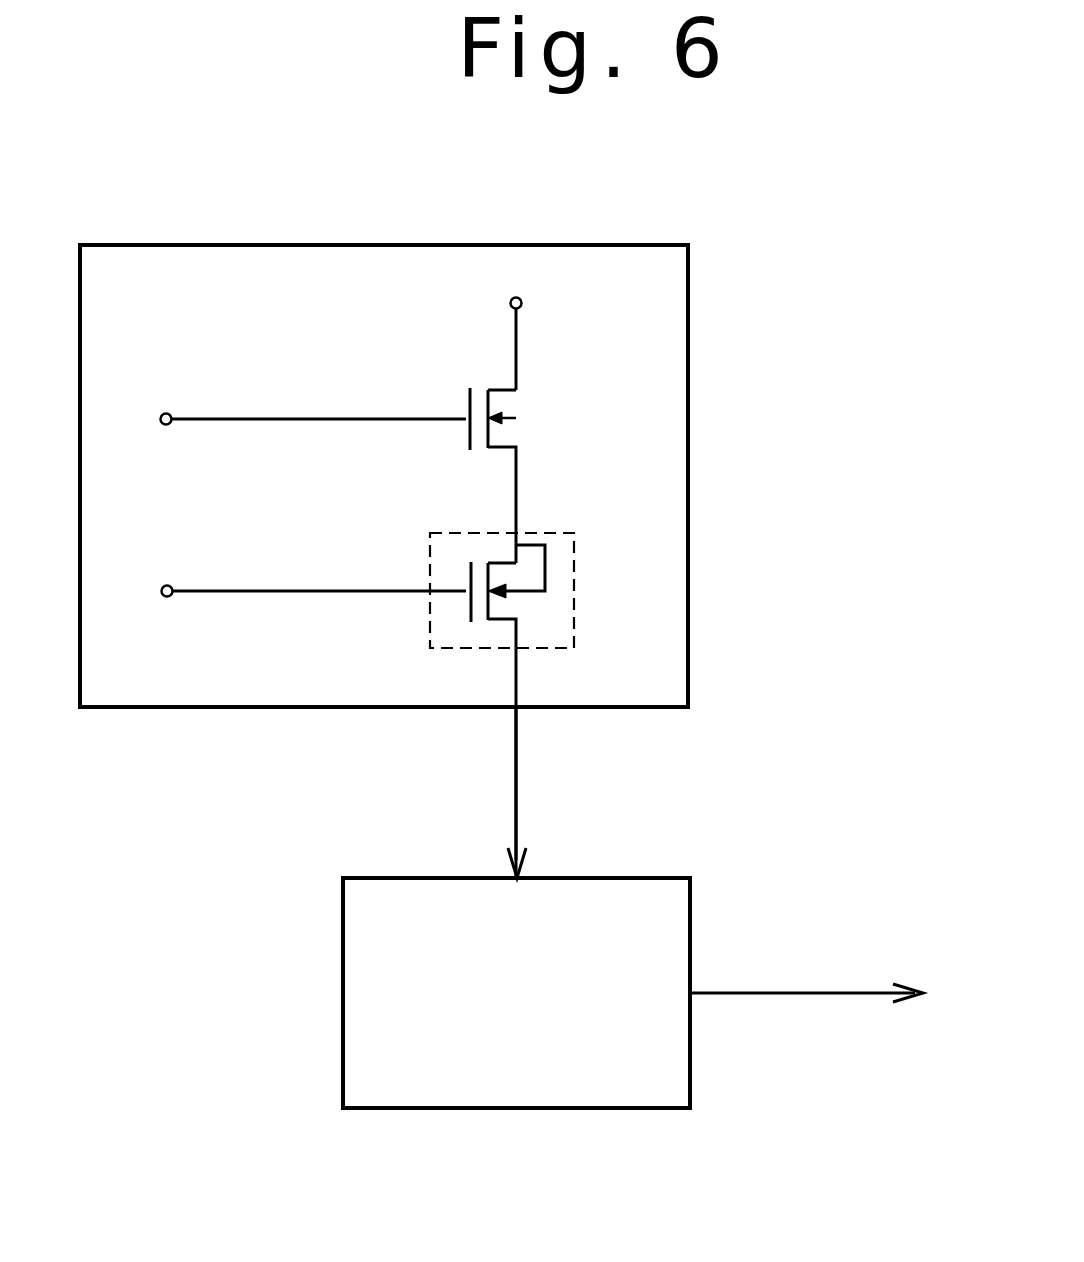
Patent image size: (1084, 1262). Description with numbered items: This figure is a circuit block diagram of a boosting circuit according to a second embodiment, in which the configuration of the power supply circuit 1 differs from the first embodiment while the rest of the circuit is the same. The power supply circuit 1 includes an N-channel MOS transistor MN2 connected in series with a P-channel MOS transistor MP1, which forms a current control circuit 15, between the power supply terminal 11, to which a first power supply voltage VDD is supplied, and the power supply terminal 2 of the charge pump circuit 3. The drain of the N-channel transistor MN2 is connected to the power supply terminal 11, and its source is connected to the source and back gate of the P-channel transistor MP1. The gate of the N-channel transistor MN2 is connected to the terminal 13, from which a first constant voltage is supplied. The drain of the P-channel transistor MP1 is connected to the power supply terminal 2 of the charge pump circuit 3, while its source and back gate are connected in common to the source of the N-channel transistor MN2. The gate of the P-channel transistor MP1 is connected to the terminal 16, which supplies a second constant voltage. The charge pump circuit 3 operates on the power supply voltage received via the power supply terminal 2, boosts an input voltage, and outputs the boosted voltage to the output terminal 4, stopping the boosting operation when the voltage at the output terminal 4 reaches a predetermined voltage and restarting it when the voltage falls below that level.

The power supply circuit 1 is at (690, 360).
The power supply terminal 11 is at (523, 303).
The terminal 13 is at (166, 412).
The terminal 16 is at (167, 584).
The current control circuit 15 is at (428, 618).
The N-channel MOS transistor MN2 is at (505, 432).
The P-channel MOS transistor MP1 is at (505, 607).
The power supply terminal 2 is at (518, 763).
The charge pump circuit 3 is at (343, 993).
The output terminal 4 is at (805, 990).